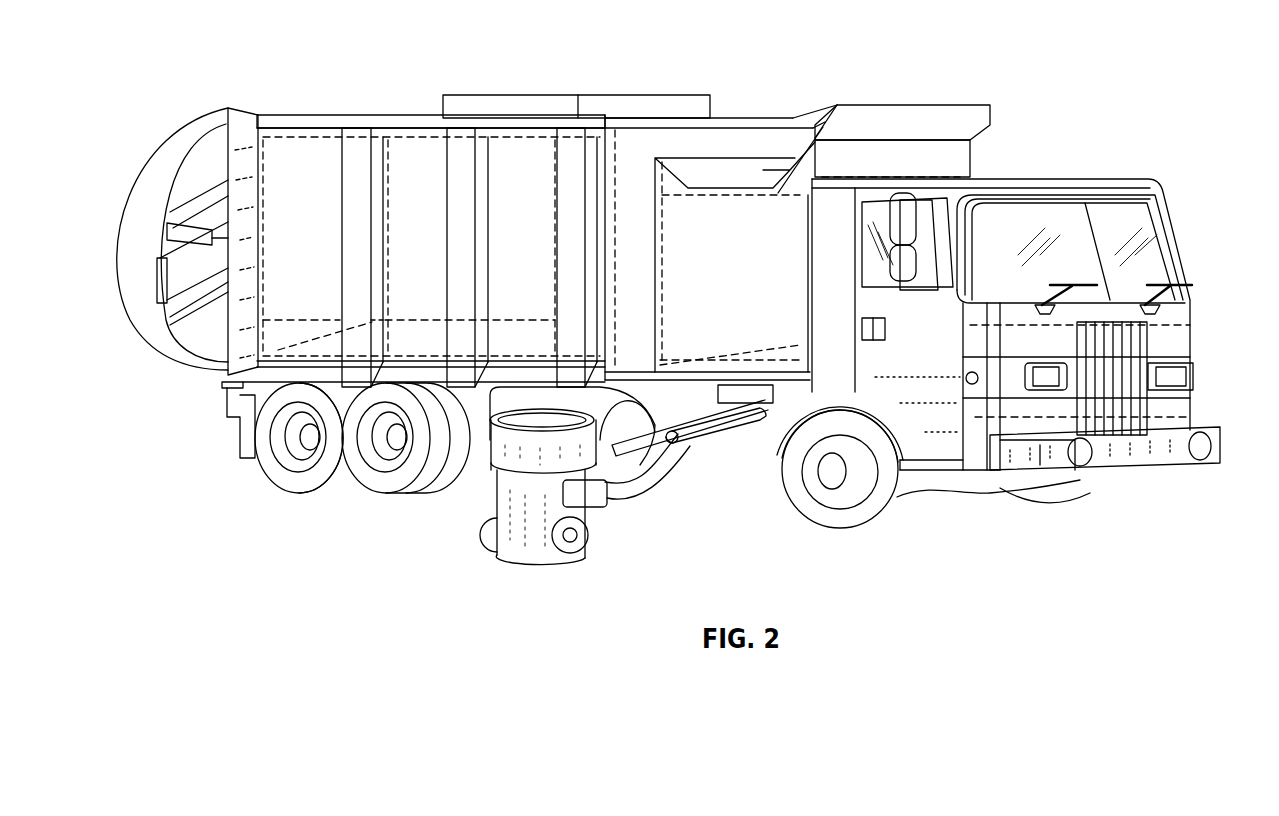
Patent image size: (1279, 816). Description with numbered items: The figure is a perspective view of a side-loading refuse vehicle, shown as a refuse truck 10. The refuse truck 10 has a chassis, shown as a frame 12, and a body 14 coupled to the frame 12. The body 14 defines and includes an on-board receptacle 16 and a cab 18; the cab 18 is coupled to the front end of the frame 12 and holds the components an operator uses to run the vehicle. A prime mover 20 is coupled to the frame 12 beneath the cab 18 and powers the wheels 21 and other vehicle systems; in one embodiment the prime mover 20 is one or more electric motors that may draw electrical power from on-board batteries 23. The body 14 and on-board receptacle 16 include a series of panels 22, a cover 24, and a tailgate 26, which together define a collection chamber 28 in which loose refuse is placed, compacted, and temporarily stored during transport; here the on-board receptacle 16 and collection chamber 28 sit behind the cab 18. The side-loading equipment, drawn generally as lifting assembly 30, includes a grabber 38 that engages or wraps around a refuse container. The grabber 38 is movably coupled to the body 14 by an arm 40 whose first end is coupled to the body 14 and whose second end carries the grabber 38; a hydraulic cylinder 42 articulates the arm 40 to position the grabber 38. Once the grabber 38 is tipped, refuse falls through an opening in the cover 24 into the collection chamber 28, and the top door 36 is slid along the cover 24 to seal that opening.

The refuse truck 10 is at (1108, 124).
The frame 12 is at (940, 485).
The body 14 is at (489, 77).
The on-board receptacle 16 is at (350, 115).
The cab 18 is at (1095, 180).
The prime mover 20 is at (1023, 408).
The wheels 21 is at (288, 475).
The panels 22 is at (286, 170).
The batteries 23 is at (1113, 385).
The cover 24 is at (415, 115).
The tailgate 26 is at (147, 262).
The collection chamber 28 is at (526, 150).
The container lift assembly 30 is at (666, 534).
The top door 36 is at (660, 95).
The grabber 38 is at (590, 500).
The arm 40 is at (690, 442).
The hydraulic cylinder 42 is at (745, 432).